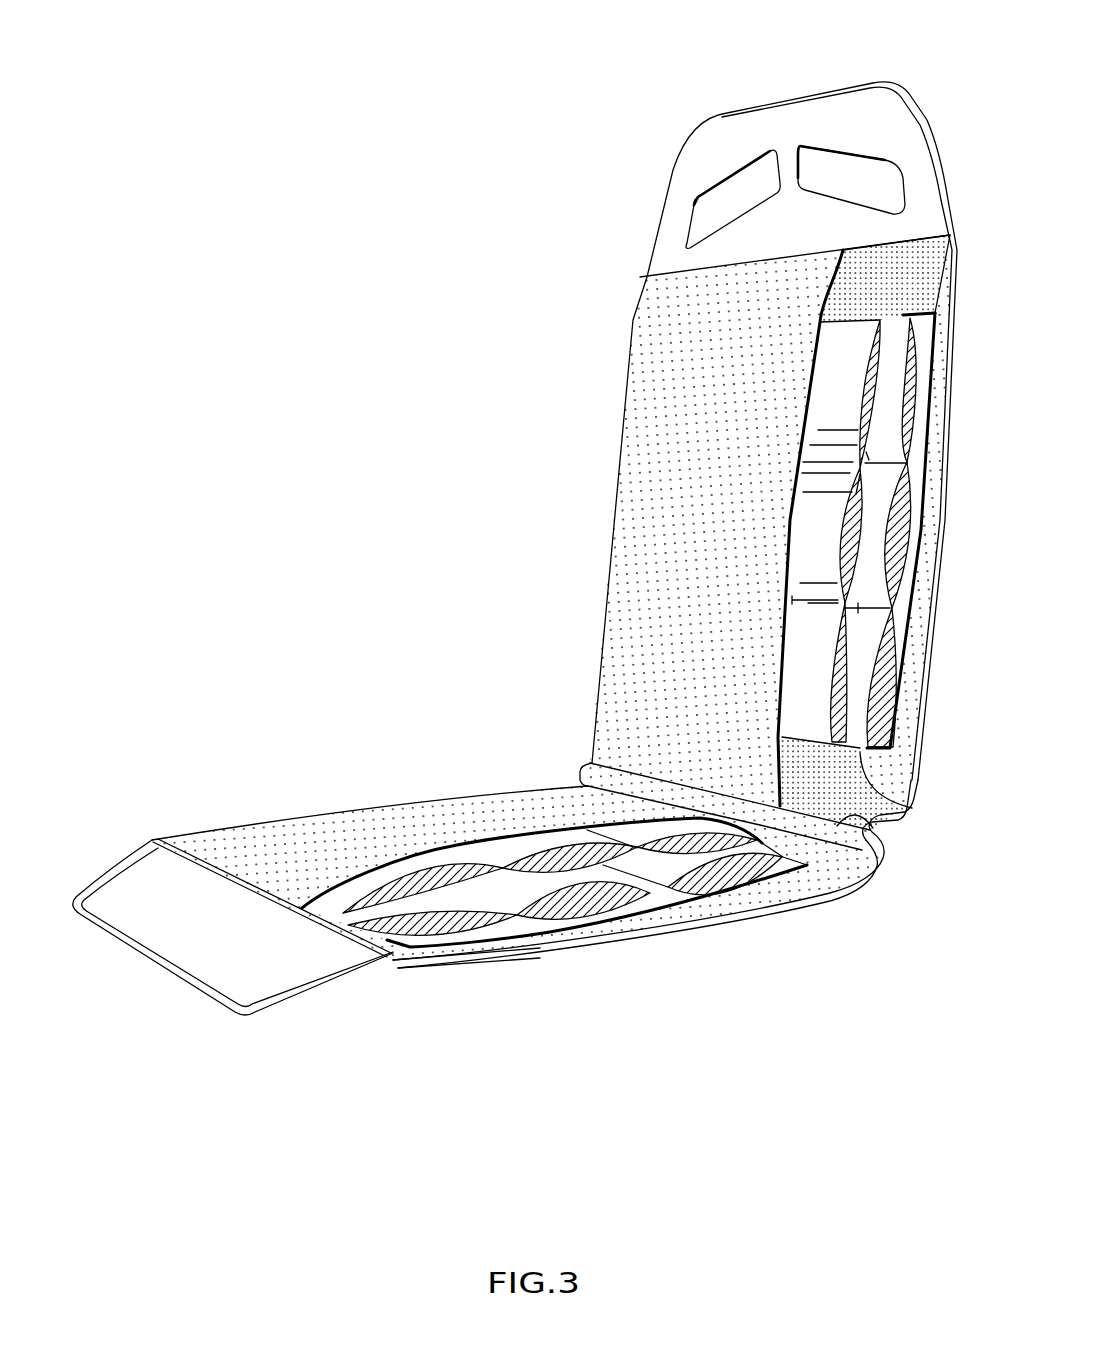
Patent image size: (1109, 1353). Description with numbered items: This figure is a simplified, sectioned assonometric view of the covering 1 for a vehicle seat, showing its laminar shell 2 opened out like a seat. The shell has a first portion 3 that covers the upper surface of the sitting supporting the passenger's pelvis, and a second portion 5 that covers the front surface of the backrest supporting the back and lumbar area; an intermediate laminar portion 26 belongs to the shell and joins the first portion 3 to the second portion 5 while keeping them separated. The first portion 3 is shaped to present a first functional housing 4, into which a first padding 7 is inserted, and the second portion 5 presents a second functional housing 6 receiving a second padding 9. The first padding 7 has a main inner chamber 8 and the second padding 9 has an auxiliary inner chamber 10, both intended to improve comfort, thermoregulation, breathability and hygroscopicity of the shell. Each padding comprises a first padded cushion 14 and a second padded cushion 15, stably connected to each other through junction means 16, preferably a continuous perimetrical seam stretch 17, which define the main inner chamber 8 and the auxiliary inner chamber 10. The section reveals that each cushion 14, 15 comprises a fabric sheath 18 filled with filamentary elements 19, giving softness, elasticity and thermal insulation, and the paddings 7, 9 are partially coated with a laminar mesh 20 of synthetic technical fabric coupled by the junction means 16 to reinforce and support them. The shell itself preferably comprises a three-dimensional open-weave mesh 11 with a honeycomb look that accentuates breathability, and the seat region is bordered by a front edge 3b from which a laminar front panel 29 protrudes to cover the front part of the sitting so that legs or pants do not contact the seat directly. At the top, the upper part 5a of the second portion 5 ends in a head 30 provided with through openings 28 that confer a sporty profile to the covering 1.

The covering 1 is at (293, 178).
The laminar shell 2 is at (597, 692).
The first portion 3 is at (532, 820).
The seat cushion front edge 3b is at (390, 971).
The first functional housing 4 is at (810, 874).
The second portion 5 is at (713, 508).
The upper part 5a is at (640, 274).
The second functional housing 6 is at (857, 278).
The first padding 7 is at (744, 881).
The main inner chamber 8 is at (513, 876).
The second padding 9 is at (853, 384).
The auxiliary inner chamber 10 is at (870, 532).
The three-dimensional open-weave mesh 11 is at (242, 858).
The first padded cushion 14 is at (838, 690).
The second padded cushion 15 is at (888, 658).
The junction means 16 is at (900, 320).
The continuous perimetrical seam stretch 17 is at (860, 753).
The fabric sheath 18 is at (402, 875).
The filamentary elements 19 is at (473, 867).
The laminar mesh 20 is at (898, 612).
The intermediate laminar portion 26 is at (877, 835).
The through openings 28 is at (820, 176).
The laminar front panel 29 is at (180, 942).
The head 30 is at (880, 132).